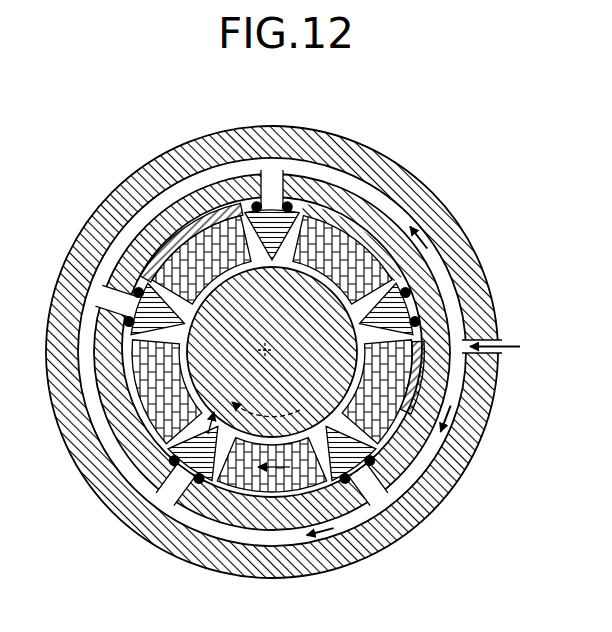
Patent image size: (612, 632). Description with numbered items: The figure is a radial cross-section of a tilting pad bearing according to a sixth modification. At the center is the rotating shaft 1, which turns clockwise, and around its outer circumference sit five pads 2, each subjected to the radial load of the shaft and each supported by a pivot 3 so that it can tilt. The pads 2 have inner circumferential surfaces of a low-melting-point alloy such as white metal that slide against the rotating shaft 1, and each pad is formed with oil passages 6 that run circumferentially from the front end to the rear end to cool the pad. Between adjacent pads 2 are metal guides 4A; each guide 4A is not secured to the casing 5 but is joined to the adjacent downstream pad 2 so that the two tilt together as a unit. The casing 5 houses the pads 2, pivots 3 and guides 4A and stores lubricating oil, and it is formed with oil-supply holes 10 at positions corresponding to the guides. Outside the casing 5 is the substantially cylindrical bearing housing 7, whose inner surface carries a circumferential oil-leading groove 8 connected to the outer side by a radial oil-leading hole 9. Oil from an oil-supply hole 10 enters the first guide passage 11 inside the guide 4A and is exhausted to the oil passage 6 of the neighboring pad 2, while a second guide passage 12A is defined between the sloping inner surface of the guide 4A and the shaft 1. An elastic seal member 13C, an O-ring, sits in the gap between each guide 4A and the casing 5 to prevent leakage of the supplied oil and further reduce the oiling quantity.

The rotating shaft 1 is at (290, 296).
The pad 2 is at (190, 232).
The pivot 3 is at (158, 215).
The guide 4A is at (135, 285).
The casing 5 is at (380, 212).
The oil passage 6 is at (236, 505).
The bearing housing 7 is at (448, 208).
The circumferential oil-leading groove 8 is at (422, 302).
The radial oil-leading hole 9 is at (488, 354).
The oil-supply hole 10 is at (378, 496).
The first guide passage 11 is at (357, 515).
The second guide passage 12A is at (392, 472).
The elastic seal member 13C is at (393, 480).